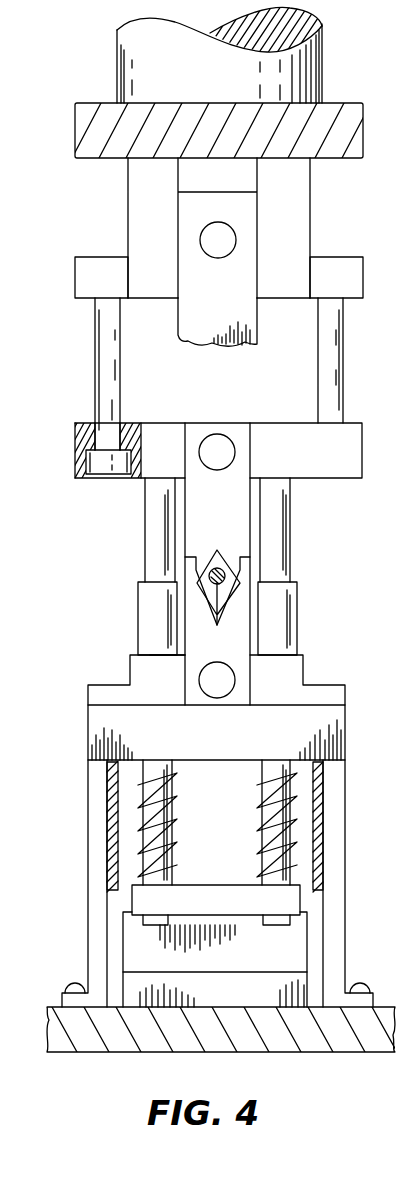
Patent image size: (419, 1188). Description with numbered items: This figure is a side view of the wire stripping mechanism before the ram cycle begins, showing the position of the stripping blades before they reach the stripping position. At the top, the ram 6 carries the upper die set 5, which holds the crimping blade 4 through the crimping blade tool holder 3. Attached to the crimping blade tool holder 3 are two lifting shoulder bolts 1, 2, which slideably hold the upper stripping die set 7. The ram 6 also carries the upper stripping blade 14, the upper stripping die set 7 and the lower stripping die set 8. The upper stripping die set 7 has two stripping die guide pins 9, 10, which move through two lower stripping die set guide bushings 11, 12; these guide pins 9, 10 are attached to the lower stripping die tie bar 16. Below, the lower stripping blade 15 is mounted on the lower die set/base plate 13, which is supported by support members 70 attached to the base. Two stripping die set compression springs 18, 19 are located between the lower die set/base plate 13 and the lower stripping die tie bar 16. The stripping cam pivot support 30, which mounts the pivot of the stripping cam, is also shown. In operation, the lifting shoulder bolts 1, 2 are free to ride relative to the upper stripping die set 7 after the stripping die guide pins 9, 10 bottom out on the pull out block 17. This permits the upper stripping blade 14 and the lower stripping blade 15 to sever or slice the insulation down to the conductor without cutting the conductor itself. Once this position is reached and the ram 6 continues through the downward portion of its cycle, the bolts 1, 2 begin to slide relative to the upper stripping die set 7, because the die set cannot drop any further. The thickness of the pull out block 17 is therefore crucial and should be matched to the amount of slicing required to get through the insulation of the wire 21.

The lifting shoulder bolt 1 is at (343, 372).
The lifting shoulder bolt 2 is at (95, 362).
The crimping blade tool holder 3 is at (310, 207).
The crimping blade 4 is at (188, 247).
The upper die set 5 is at (363, 130).
The ram 6 is at (323, 60).
The upper stripping die set 7 is at (362, 445).
The lower stripping die set 8 is at (313, 683).
The stripping die guide pin 9 is at (282, 531).
The stripping die guide pin 10 is at (150, 530).
The lower stripping die set guide bushing 11 is at (148, 620).
The lower stripping die set guide bushing 12 is at (290, 632).
The lower die set/base plate 13 is at (345, 732).
The upper stripping blade 14 is at (250, 465).
The lower stripping blade 15 is at (190, 650).
The lower stripping die tie bar 16 is at (292, 905).
The pull out block 17 is at (250, 968).
The stripping die set compression spring 18 is at (262, 835).
The stripping die set compression spring 19 is at (190, 840).
The wire 21 is at (217, 550).
The stripping cam pivot support 30 is at (108, 840).
The support member 70 is at (88, 785).